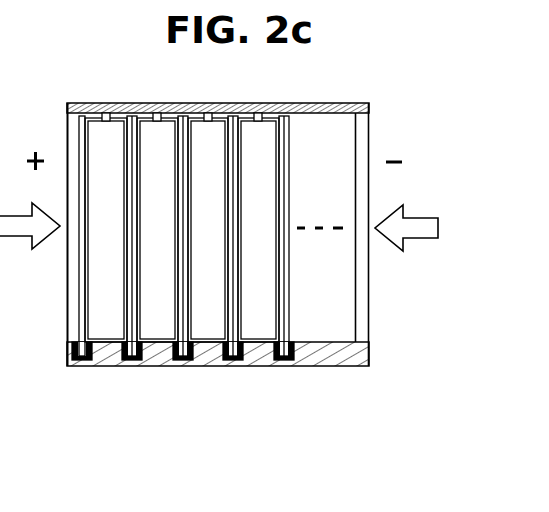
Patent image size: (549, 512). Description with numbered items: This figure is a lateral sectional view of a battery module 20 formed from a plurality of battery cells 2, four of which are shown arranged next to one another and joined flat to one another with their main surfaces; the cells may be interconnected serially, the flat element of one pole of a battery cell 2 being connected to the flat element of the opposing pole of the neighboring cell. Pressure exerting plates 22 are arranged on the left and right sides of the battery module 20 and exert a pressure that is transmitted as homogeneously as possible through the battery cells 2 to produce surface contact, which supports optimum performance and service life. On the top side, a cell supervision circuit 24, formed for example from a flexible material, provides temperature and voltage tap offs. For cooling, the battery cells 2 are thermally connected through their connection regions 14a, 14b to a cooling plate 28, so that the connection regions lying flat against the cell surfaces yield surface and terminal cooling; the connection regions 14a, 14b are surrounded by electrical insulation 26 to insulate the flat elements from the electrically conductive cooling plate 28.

The battery module 20 is at (357, 87).
The pressure exerting plates 22 is at (362, 300).
The cell supervision circuit 24 is at (103, 103).
The electrical insulation 26 is at (127, 367).
The cooling plate 28 is at (330, 367).
The battery cell 2 is at (72, 288).
The connection region 14a is at (250, 366).
The connection region 14b is at (221, 367).